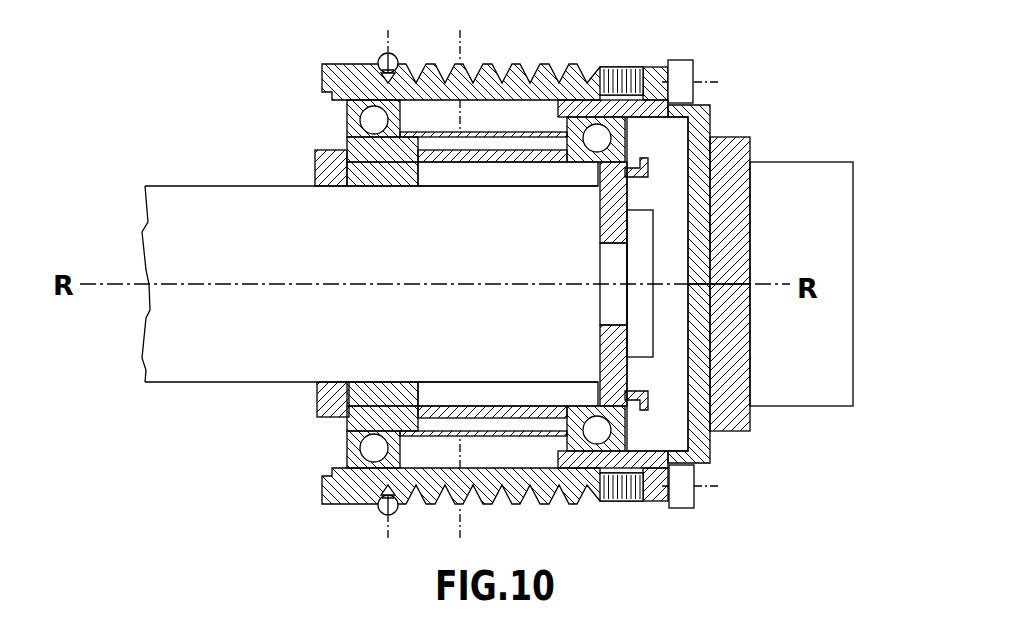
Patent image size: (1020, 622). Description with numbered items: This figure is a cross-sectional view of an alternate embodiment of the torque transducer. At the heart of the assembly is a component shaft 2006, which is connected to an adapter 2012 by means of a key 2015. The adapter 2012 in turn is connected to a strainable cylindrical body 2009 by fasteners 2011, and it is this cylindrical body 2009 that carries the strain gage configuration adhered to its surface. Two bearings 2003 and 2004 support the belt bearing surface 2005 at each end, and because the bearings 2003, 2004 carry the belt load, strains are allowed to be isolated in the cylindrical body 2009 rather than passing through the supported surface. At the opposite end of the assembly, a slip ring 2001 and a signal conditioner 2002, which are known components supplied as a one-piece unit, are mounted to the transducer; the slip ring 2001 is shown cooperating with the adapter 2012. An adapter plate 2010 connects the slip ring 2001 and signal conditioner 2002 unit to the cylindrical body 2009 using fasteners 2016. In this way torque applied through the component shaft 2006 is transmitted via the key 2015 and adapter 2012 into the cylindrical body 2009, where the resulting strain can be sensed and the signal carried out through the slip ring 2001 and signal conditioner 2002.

The slip ring 2001 is at (722, 137).
The signal conditioner 2002 is at (795, 162).
The bearing 2003 is at (348, 110).
The bearing 2004 is at (595, 85).
The belt bearing surface 2005 is at (484, 64).
The component shaft 2006 is at (238, 186).
The strainable cylindrical body 2009 is at (533, 436).
The adapter plate 2010 is at (712, 445).
The fasteners 2011 is at (316, 154).
The adapter 2012 is at (490, 404).
The key 2015 is at (473, 176).
The fasteners 2016 is at (692, 70).